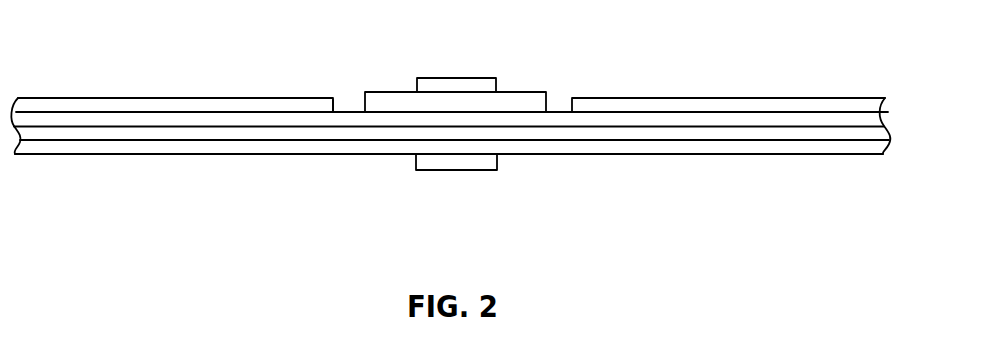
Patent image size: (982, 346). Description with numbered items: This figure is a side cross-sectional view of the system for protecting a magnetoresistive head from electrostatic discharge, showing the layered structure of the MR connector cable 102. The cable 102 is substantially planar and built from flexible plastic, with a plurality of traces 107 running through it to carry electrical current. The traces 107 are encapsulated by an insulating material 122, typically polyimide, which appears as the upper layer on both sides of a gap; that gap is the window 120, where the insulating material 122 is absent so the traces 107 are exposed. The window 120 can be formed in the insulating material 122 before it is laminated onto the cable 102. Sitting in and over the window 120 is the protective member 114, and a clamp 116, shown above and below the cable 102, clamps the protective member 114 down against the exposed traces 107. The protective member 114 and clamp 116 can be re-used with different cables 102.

The MR connector cable 102 is at (100, 98).
The traces 107 is at (559, 112).
The protective member 114 is at (517, 92).
The clamp 116 is at (450, 77).
The window 120 is at (335, 106).
The insulating material 122 is at (816, 104).